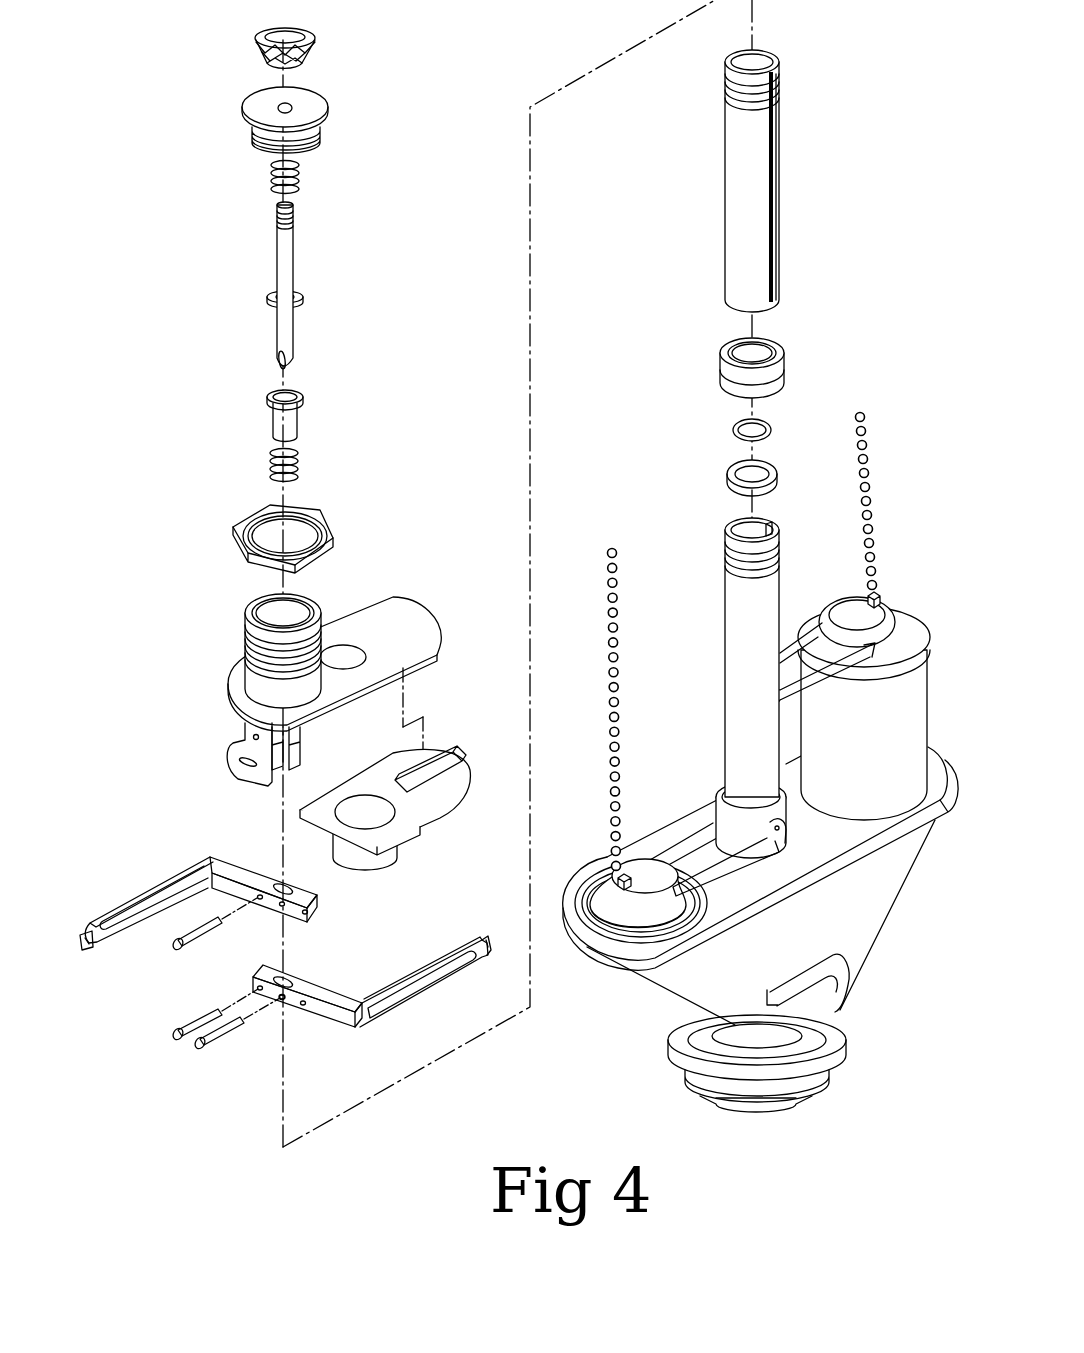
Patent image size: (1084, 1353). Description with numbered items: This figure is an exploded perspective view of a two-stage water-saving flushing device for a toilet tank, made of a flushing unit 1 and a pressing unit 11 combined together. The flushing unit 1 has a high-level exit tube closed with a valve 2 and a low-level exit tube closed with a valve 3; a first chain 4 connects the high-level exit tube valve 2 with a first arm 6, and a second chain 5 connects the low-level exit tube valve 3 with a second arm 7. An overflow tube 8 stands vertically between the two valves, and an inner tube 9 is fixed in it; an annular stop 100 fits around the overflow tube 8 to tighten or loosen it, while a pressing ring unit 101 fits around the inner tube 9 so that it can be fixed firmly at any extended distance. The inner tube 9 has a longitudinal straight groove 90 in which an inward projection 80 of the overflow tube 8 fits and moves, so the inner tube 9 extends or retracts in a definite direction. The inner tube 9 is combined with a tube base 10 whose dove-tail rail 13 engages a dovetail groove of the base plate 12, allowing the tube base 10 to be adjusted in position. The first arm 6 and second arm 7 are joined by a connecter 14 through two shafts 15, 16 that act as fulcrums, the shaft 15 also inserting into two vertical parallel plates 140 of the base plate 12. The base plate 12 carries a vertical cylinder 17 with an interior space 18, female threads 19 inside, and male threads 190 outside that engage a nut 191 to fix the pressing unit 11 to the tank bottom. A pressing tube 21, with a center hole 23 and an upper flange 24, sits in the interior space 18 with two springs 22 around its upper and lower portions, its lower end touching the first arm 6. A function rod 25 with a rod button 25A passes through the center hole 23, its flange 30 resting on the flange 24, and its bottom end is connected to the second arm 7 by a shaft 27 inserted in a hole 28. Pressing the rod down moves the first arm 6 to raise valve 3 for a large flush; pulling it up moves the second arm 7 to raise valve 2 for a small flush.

The flushing unit 1 is at (897, 927).
The high-level exit tube valve 2 is at (897, 625).
The low-level exit tube valve 3 is at (617, 903).
The first chain 4 is at (605, 702).
The second chain 5 is at (869, 513).
The first arm 6 is at (150, 890).
The second arm 7 is at (427, 987).
The overflow tube 8 is at (732, 615).
The inner tube 9 is at (728, 198).
The tube base 10 is at (372, 857).
The pressing unit 11 is at (180, 571).
The base plate 12 is at (408, 618).
The dove-tail rail 13 is at (443, 758).
The connecter 14 is at (211, 767).
The shaft 15 is at (198, 937).
The shaft 16 is at (193, 1025).
The vertical cylinder 17 is at (248, 683).
The interior space 18 is at (275, 623).
The female threads 19 is at (257, 598).
The pressing tube 21 is at (298, 421).
The springs 22 is at (270, 174).
The center hole 23 is at (293, 388).
The flange 24 is at (301, 394).
The function rod 25 is at (290, 262).
The rod button 25A is at (310, 44).
The shaft 27 is at (223, 1036).
The hole 28 is at (283, 999).
The flange 30 is at (304, 298).
The inward projection 80 is at (773, 522).
The longitudinal straight groove 90 is at (775, 175).
The annular stop 100 is at (787, 367).
The pressing ring unit 101 is at (778, 477).
The vertical parallel plates 140 is at (300, 759).
The male threads 190 is at (243, 658).
The nut 191 is at (318, 513).